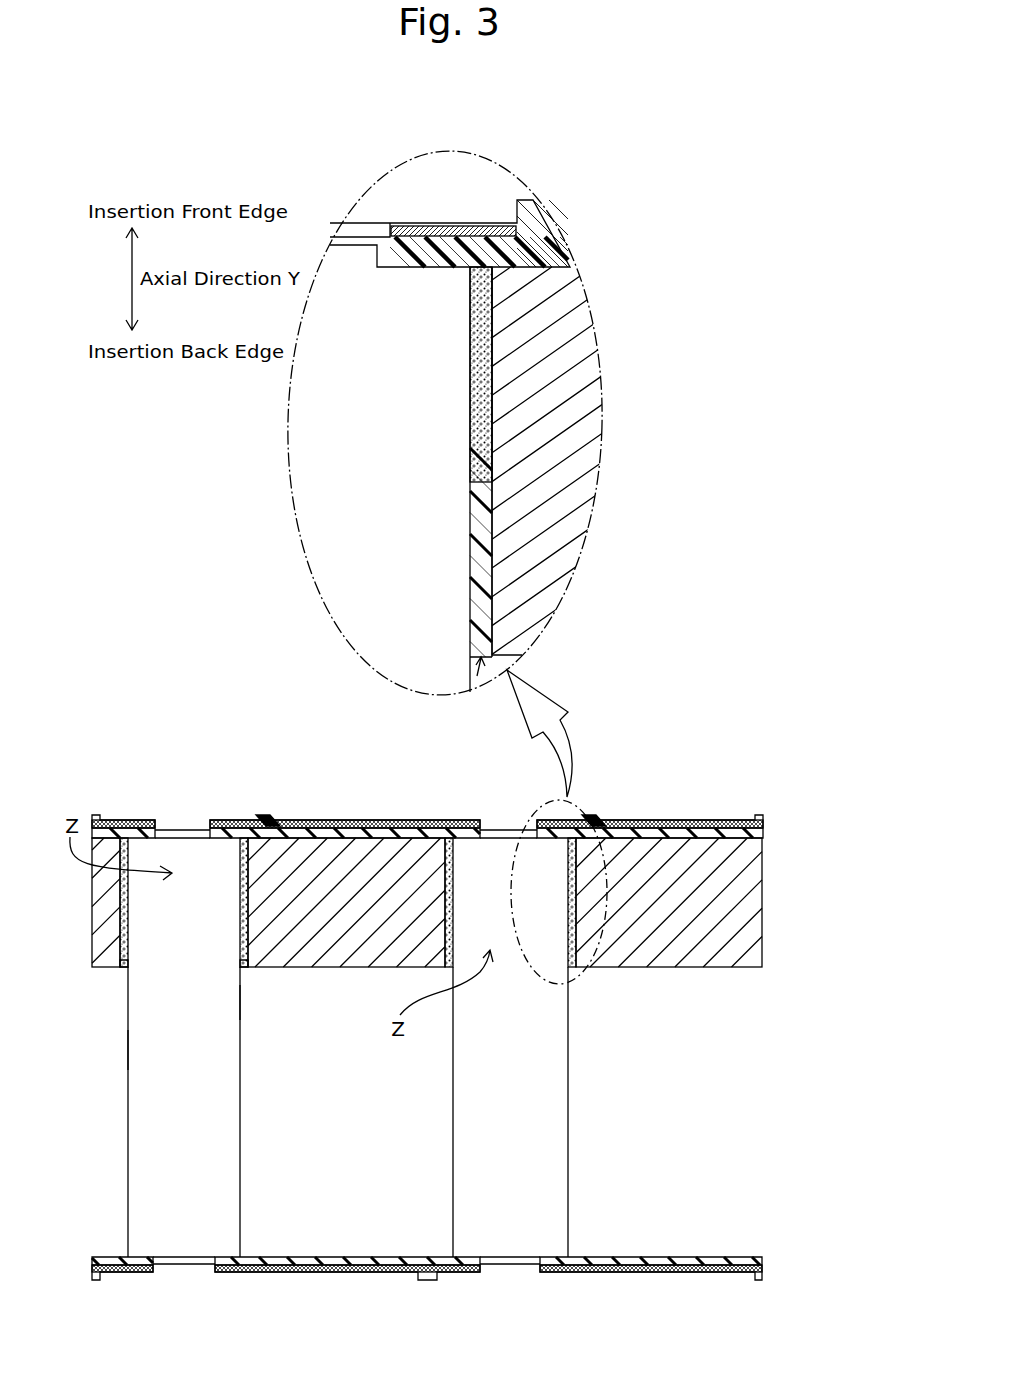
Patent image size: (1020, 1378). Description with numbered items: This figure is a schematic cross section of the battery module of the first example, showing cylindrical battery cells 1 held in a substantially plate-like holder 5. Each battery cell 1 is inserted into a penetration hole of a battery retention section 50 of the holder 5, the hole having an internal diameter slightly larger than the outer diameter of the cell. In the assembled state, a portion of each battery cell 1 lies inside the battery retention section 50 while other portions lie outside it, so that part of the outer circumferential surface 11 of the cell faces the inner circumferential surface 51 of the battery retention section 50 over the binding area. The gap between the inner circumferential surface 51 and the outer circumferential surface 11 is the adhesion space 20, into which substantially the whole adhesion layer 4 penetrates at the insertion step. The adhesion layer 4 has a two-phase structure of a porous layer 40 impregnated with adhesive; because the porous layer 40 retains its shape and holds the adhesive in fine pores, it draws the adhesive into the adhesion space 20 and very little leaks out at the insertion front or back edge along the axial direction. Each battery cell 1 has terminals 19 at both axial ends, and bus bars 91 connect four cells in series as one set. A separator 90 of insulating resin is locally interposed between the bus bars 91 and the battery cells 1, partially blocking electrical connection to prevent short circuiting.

The battery cell 1 is at (306, 422).
The adhesion layer 4 is at (472, 400).
The holder 5 is at (585, 368).
The outer circumferential surface 11 is at (245, 1008).
The terminal 19 is at (182, 1265).
The adhesion space 20 is at (463, 692).
The porous layer 40 is at (470, 347).
The battery retention section 50 is at (453, 275).
The inner circumferential surface 51 is at (249, 946).
The separator 90 is at (680, 1258).
The bus bar 91 is at (610, 1272).